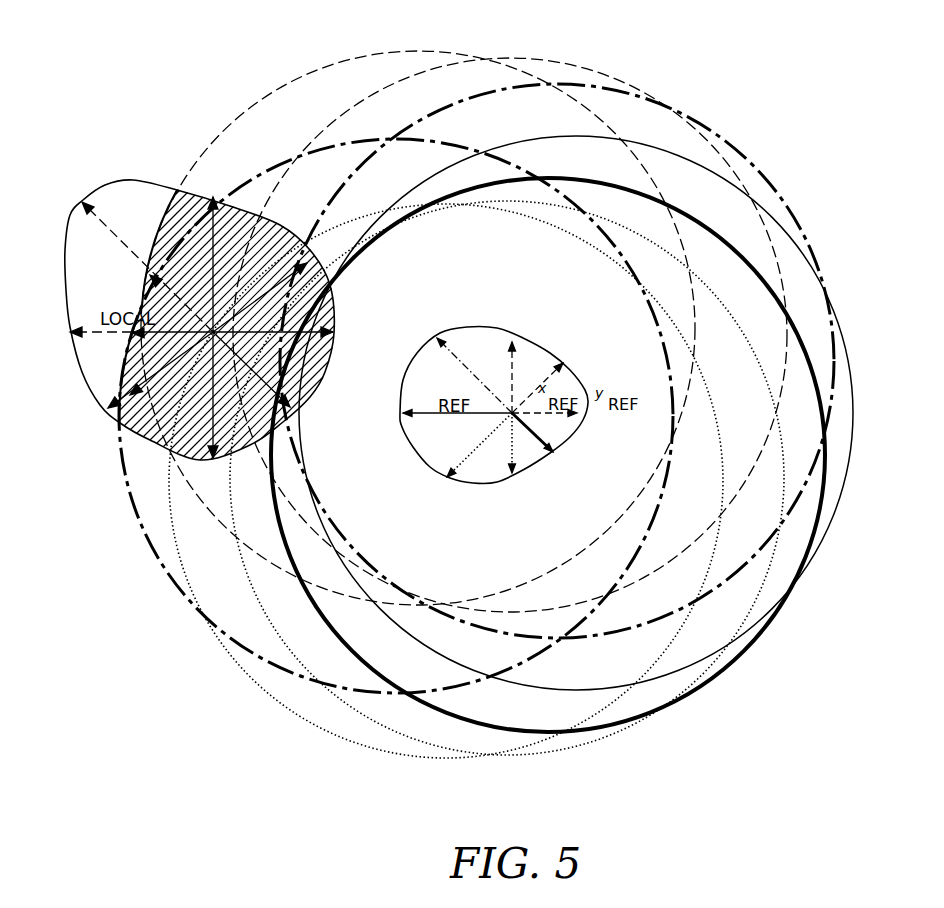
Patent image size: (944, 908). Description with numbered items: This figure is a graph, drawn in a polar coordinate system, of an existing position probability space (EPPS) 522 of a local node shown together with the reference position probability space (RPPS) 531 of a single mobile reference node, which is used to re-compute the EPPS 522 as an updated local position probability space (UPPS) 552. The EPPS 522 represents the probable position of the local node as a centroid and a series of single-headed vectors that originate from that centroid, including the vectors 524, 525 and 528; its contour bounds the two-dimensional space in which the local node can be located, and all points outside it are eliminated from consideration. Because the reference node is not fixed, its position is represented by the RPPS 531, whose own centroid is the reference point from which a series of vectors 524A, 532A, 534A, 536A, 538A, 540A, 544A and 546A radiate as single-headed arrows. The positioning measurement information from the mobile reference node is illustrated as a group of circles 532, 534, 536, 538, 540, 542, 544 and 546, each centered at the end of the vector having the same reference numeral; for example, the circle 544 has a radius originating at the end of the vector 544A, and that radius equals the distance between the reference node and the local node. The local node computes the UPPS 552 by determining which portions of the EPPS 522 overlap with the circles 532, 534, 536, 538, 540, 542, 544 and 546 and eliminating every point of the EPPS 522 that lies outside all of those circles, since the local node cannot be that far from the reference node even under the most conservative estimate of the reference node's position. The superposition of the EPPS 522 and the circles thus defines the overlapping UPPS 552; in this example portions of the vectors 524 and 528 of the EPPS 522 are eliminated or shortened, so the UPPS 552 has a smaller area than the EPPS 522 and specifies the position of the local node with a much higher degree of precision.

The existing position probability space 522 is at (125, 179).
The vector of the existing position probability space 524 is at (67, 332).
The local lower-left extent vector 525 is at (108, 410).
The vector of the existing position probability space 528 is at (83, 200).
The reference position probability space 531 is at (463, 323).
The circle 532 is at (278, 92).
The circle 534 is at (833, 527).
The circle 536 is at (583, 745).
The circle 538 is at (737, 657).
The circle 540 is at (317, 723).
The circle 542 is at (135, 497).
The circle 544 is at (600, 73).
The circle 546 is at (753, 167).
The updated local position probability space 552 is at (187, 255).
The reference left displacement vector 524A is at (403, 413).
The vector of the reference position probability space 532A is at (436, 336).
The vector of the reference position probability space 534A is at (578, 415).
The vector of the reference position probability space 536A is at (512, 478).
The vector of the reference position probability space 538A is at (556, 455).
The vector of the reference position probability space 540A is at (447, 477).
The vector of the reference position probability space 544A is at (514, 334).
The vector of the reference position probability space 546A is at (565, 364).